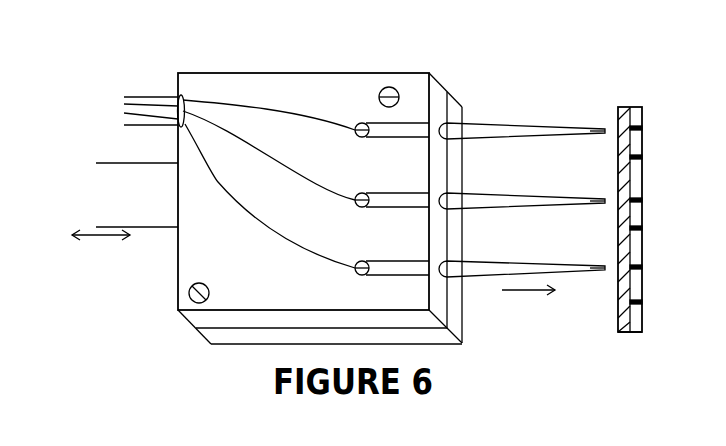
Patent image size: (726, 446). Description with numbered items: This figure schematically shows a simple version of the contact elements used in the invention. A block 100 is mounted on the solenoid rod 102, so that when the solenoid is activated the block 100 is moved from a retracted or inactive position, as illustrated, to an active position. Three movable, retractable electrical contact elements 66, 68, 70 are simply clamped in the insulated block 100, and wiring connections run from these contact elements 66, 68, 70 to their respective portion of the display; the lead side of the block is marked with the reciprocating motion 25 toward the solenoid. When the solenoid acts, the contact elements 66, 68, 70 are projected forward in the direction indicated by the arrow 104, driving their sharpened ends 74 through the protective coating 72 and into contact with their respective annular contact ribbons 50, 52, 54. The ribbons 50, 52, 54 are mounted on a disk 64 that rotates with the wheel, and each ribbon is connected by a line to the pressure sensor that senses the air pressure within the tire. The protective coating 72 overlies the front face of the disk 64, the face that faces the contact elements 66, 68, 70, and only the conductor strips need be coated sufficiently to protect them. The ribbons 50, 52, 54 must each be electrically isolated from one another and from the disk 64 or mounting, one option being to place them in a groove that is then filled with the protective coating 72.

The block 100 is at (281, 73).
The solenoid rod 102 is at (125, 163).
The solenoid connection / reciprocating motion 25 is at (100, 236).
The contact element 66 is at (480, 117).
The contact element 68 is at (480, 188).
The contact element 70 is at (480, 256).
The sharpened ends 74 is at (602, 126).
The arrow 104 is at (511, 294).
The protective coating 72 is at (615, 313).
The annular contact ribbon 54 is at (642, 128).
The annular contact ribbon 52 is at (642, 197).
The annular contact ribbon 50 is at (642, 267).
The disk 64 is at (642, 332).